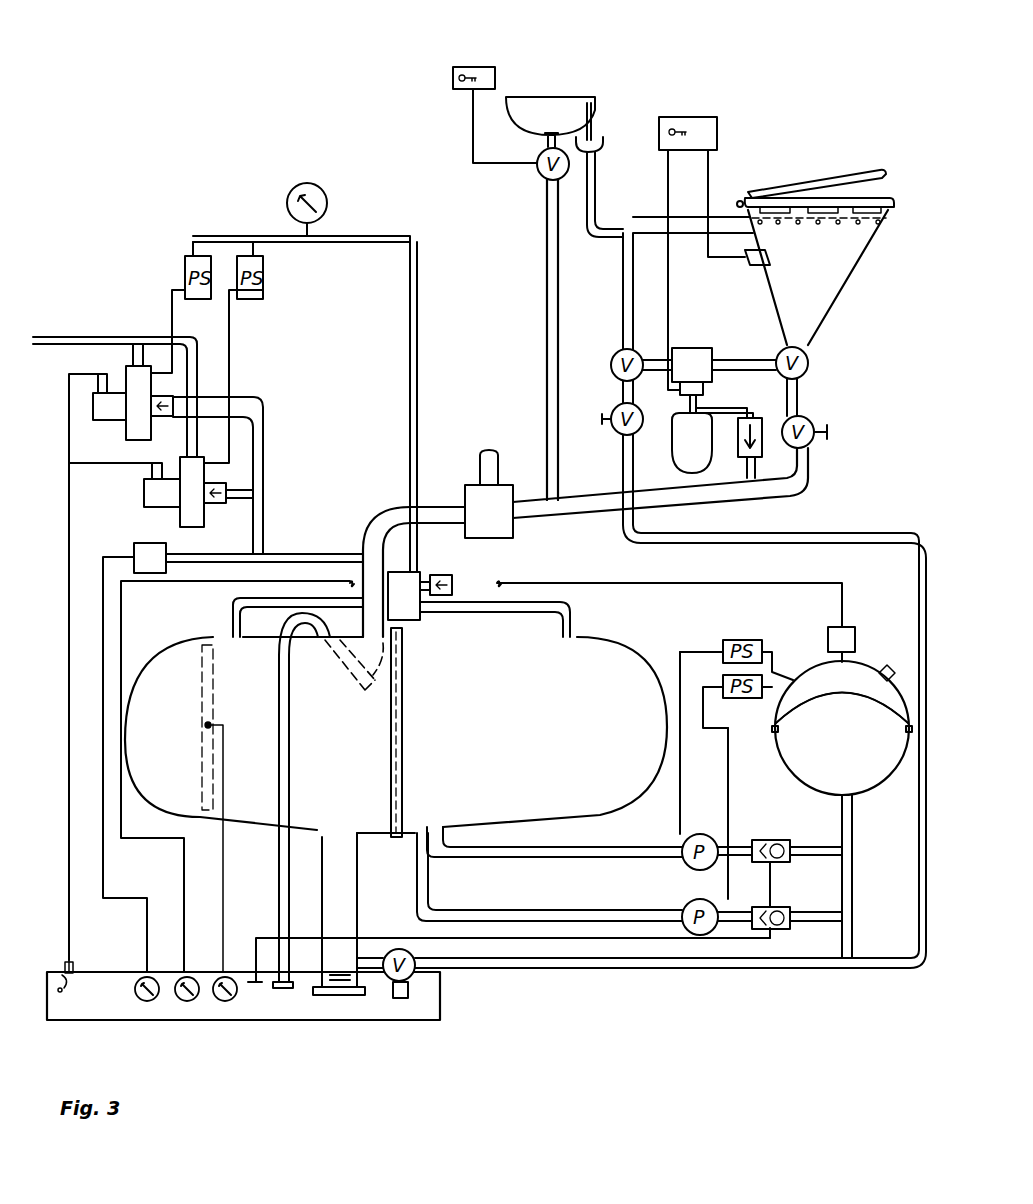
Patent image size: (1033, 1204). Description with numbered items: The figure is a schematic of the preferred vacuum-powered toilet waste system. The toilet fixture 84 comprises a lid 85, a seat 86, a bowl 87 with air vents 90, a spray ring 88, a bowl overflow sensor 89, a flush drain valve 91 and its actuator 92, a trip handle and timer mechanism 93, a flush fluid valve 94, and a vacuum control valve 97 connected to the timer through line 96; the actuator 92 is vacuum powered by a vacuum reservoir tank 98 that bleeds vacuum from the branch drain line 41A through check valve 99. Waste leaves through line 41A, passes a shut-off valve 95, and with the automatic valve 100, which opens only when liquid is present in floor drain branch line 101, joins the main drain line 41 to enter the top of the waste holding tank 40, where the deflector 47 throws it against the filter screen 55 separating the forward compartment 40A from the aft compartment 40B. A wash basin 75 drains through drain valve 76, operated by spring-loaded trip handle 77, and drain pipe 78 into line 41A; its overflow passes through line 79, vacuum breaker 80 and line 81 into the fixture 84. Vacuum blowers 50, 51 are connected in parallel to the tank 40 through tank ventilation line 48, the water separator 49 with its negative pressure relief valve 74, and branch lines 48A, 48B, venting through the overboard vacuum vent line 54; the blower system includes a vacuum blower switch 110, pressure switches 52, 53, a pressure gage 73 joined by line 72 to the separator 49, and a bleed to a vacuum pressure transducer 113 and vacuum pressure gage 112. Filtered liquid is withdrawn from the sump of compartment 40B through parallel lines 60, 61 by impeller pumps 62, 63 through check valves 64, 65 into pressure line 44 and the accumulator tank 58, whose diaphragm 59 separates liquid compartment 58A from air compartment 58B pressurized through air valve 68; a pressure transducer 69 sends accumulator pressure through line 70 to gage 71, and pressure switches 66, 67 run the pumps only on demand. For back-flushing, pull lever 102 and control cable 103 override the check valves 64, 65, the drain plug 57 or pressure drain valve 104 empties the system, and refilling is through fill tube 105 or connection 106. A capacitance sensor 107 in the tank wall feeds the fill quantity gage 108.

The waste holding tank 40 is at (632, 641).
The forward compartment 40A is at (338, 730).
The aft compartment 40B is at (533, 726).
The main drain line 41 is at (390, 510).
The branch drain line 41A is at (575, 515).
The pressure line 44 is at (623, 300).
The deflector 47 is at (355, 637).
The tank ventilation line 48 is at (330, 555).
The branch line 48A is at (240, 600).
The branch line 48B is at (575, 608).
The water separator 49 is at (412, 575).
The vacuum pump 50 is at (126, 437).
The vacuum pump 51 is at (180, 515).
The pressure switch 52 is at (185, 280).
The pressure switch 53 is at (263, 288).
The overboard vacuum vent line 54 is at (100, 337).
The filter screen 55 is at (410, 713).
The drain plug 57 is at (340, 995).
The accumulator tank 58 is at (871, 659).
The liquid compartment 58A is at (844, 753).
The air compartment 58B is at (842, 681).
The bladder or diaphragm 59 is at (797, 708).
The line 60 is at (630, 847).
The line 61 is at (600, 910).
The impeller pump 62 is at (700, 834).
The impeller pump 63 is at (690, 900).
The check valve 64 is at (775, 840).
The check valve 65 is at (780, 907).
The pressure switch 66 is at (740, 640).
The pressure switch 67 is at (745, 700).
The air valve 68 is at (893, 668).
The pressure transducer 69 is at (828, 635).
The line 70 is at (185, 583).
The pressure read-out gage 71 is at (187, 1001).
The line 72 is at (408, 320).
The pressure gage 73 is at (327, 199).
The negative pressure relief valve 74 is at (460, 578).
The wash basin 75 is at (554, 92).
The drain valve 76 is at (540, 178).
The trip handle 77 is at (470, 67).
The drain pipe 78 is at (547, 300).
The overflow line 79 is at (592, 120).
The vacuum breaker 80 is at (605, 148).
The line 81 is at (596, 200).
The toilet fixture 84 is at (897, 177).
The lid 85 is at (795, 183).
The seat 86 is at (882, 195).
The bowl 87 is at (818, 277).
The spray ring 88 is at (886, 224).
The bowl overflow sensor 89 is at (755, 265).
The toilet bowl air vents 90 is at (778, 213).
The flush drain valve 91 is at (808, 363).
The flush valve actuator 92 is at (700, 348).
The trip handle and timer mechanism 93 is at (717, 130).
The flush fluid valve 94 is at (612, 365).
The shut-off valve 95 is at (826, 432).
The line 96 is at (668, 295).
The vacuum control valve 97 is at (682, 398).
The vacuum reservoir tank 98 is at (675, 455).
The check valve 99 is at (752, 418).
The automatic valve 100 is at (465, 490).
The floor drain branch line 101 is at (480, 462).
The pull lever 102 is at (255, 985).
The control cable 103 is at (385, 940).
The pressure drain valve 104 is at (410, 985).
The fill tube 105 is at (350, 675).
The connection 106 is at (400, 1000).
The capacitance sensor 107 is at (204, 715).
The storage tank fill quantity gage 108 is at (225, 1001).
The vacuum blower switch 110 is at (65, 988).
The vacuum pressure gage 112 is at (147, 1001).
The vacuum pressure transducer 113 is at (134, 548).